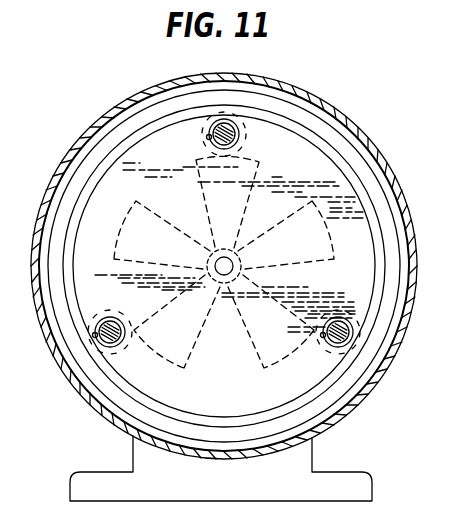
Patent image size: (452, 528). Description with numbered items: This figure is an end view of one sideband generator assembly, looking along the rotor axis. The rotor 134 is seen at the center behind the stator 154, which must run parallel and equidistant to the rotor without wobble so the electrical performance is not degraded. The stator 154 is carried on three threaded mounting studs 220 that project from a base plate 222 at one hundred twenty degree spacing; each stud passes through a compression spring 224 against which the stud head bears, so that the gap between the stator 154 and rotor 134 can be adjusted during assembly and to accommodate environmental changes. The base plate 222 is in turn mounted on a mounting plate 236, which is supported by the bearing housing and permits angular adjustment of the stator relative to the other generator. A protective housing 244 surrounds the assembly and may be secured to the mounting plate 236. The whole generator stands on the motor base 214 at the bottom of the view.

The rotor 134 is at (335, 264).
The stator 154 is at (315, 157).
The motor base 214 is at (298, 461).
The mounting studs 220 is at (229, 141).
The base plate 222 is at (152, 128).
The compression springs 224 is at (240, 137).
The mounting plate 236 is at (115, 140).
The housing 244 is at (390, 173).